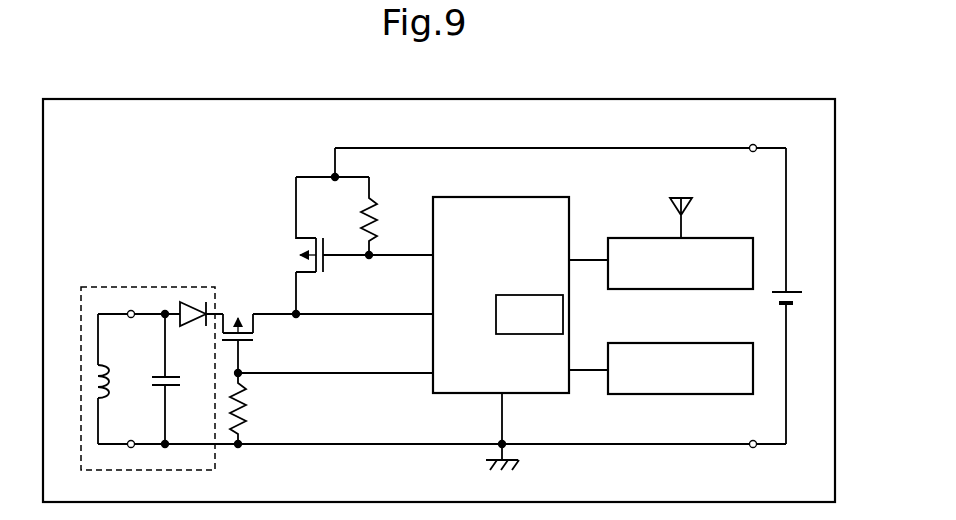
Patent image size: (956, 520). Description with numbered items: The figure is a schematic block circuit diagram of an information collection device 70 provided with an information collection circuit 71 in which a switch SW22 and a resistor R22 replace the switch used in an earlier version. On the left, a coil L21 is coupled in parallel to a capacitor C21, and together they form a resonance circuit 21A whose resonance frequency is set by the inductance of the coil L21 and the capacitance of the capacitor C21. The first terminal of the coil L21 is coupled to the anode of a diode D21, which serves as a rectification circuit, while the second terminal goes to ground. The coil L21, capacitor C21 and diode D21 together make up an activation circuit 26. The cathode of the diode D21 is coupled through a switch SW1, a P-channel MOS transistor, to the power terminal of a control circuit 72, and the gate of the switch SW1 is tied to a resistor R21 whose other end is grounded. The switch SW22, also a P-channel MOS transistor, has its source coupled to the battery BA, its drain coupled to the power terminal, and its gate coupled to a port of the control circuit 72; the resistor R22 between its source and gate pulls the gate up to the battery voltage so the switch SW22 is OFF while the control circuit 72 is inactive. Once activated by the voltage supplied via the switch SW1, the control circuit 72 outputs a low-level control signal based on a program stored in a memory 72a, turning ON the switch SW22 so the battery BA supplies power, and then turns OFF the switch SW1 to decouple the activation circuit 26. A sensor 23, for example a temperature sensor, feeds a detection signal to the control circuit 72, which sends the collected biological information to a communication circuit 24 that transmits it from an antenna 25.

The information collection device 70 is at (100, 99).
The information collection circuit 71 is at (176, 165).
The resonance circuit 21A is at (103, 306).
The activation circuit 26 is at (148, 287).
The diode D21 is at (199, 302).
The coil L21 is at (85, 362).
The capacitor C21 is at (160, 377).
The switch SW1 is at (246, 341).
The resistor R21 is at (250, 412).
The switch SW22 is at (296, 248).
The resistor R22 is at (376, 212).
The control circuit 72 is at (548, 197).
The memory 72a is at (508, 295).
The communication circuit 24 is at (732, 238).
The antenna 25 is at (688, 198).
The sensor 23 is at (730, 343).
The battery BA is at (793, 290).